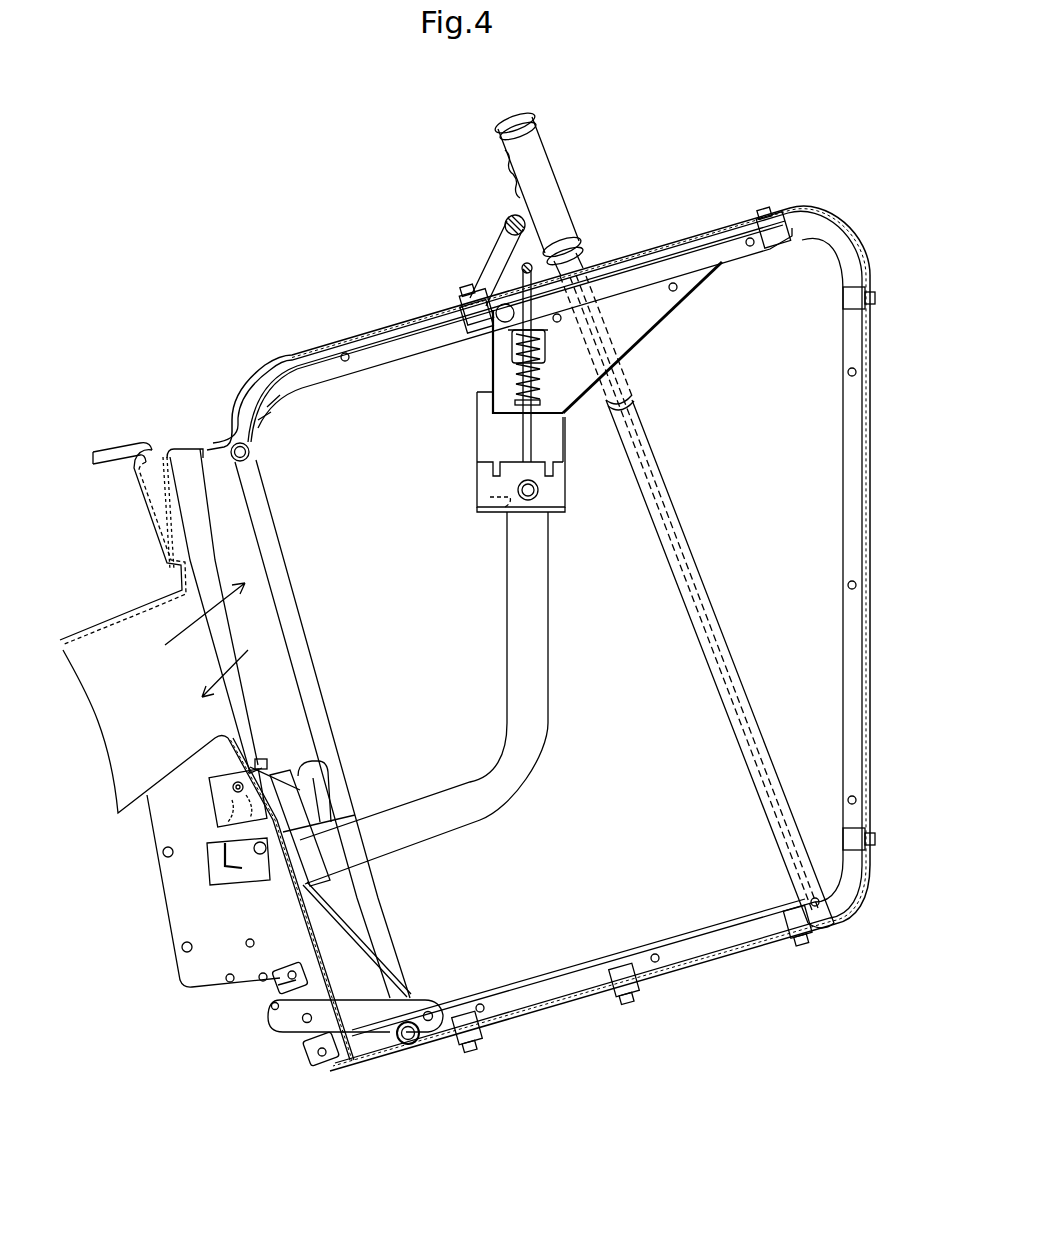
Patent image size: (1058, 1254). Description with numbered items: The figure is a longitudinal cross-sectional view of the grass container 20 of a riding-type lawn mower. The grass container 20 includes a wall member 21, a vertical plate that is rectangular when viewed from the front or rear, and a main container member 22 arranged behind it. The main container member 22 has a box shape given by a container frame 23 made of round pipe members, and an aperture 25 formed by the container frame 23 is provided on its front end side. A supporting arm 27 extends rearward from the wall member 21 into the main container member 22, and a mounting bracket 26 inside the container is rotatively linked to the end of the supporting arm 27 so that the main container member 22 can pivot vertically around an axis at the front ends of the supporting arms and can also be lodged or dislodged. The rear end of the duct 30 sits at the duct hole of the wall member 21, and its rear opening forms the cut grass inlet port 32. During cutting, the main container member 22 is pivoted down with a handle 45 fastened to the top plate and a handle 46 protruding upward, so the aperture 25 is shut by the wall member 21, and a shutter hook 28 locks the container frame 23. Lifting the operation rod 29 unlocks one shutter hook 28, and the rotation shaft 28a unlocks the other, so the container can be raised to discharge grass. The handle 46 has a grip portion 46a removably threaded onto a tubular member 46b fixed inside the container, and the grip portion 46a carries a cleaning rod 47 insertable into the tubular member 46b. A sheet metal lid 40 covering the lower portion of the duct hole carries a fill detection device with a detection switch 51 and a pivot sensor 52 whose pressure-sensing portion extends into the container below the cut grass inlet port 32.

The grass container 20 is at (768, 185).
The wall member 21 is at (200, 438).
The main container member 22 is at (705, 970).
The container frame 23 is at (262, 495).
The aperture 25 is at (190, 627).
The mounting bracket 26 is at (495, 430).
The supporting arm 27 is at (540, 695).
The shutter hook 28 is at (422, 998).
The rotation shaft 28a is at (305, 1020).
The operation rod 29 is at (115, 447).
The duct 30 is at (120, 612).
The cut grass inlet port 32 is at (234, 659).
The lid 40 is at (285, 948).
The handle 45 is at (508, 225).
The handle 46 is at (663, 500).
The grip portion 46a is at (560, 207).
The tubular member 46b is at (697, 601).
The cleaning rod 47 is at (720, 600).
The detection switch 51 is at (237, 805).
The pivot sensor 52 is at (315, 768).